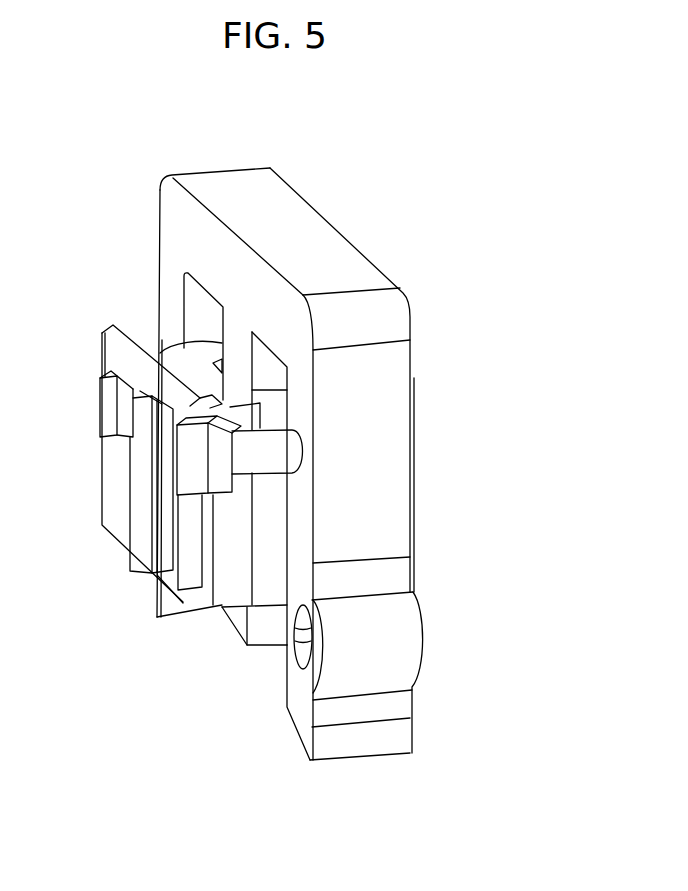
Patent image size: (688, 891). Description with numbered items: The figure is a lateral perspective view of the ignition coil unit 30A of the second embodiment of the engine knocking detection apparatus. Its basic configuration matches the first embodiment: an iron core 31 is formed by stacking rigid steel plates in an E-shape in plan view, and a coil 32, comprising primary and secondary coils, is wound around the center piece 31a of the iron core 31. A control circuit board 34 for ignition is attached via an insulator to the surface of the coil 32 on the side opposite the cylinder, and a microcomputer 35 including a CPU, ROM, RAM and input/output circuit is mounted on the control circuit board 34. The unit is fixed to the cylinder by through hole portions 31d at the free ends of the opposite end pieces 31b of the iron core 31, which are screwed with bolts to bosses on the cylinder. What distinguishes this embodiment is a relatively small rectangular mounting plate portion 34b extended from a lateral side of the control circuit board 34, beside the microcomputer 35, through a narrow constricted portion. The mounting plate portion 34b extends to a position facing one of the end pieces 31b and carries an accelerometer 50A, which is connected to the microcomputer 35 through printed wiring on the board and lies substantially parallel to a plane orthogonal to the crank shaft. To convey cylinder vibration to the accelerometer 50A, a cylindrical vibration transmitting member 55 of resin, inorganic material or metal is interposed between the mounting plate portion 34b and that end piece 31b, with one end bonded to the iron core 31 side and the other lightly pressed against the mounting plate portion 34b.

The ignition coil unit 30A is at (332, 223).
The iron core 31 is at (235, 197).
The center piece 31a is at (232, 633).
The end piece 31b is at (168, 298).
The through hole portion 31d is at (303, 650).
The coil 32 is at (217, 587).
The control circuit board 34 is at (117, 513).
The mounting plate portion 34b is at (218, 400).
The microcomputer 35 is at (143, 543).
The accelerometer 50A is at (198, 477).
The vibration transmitting member 55 is at (302, 443).